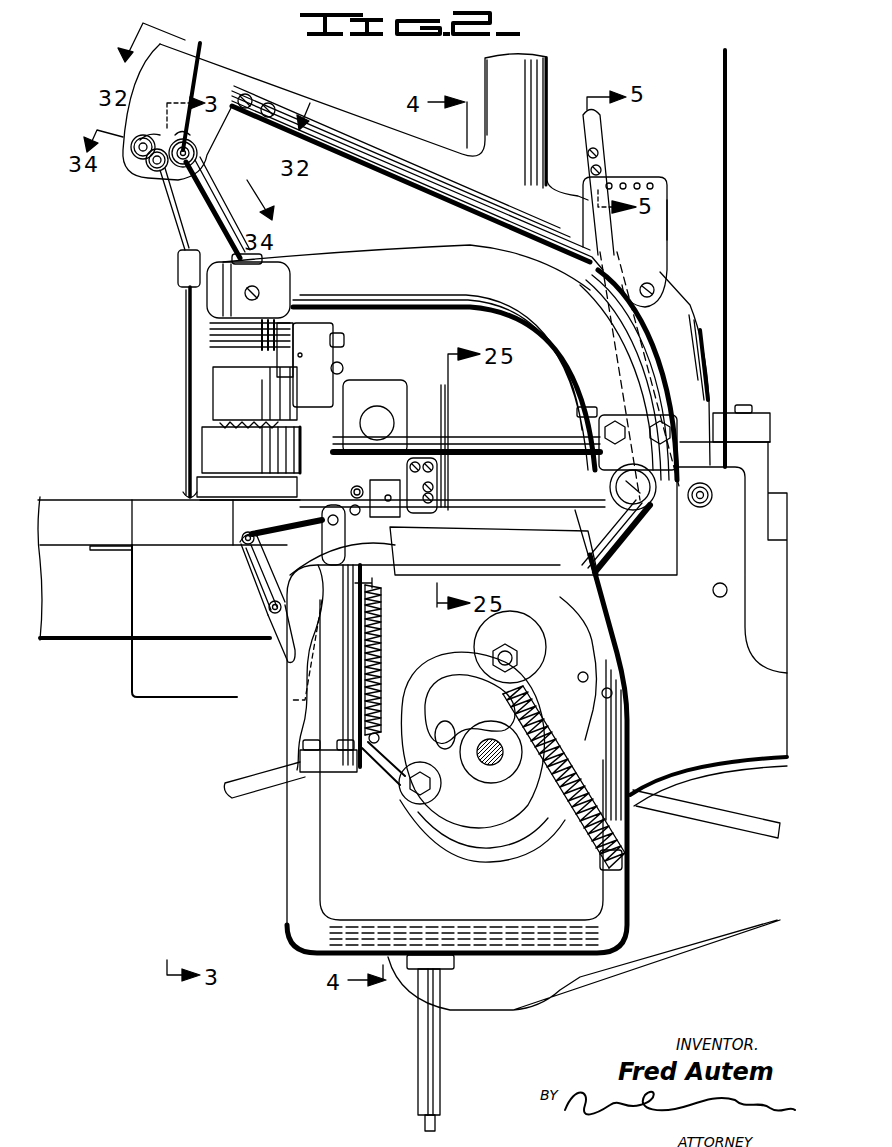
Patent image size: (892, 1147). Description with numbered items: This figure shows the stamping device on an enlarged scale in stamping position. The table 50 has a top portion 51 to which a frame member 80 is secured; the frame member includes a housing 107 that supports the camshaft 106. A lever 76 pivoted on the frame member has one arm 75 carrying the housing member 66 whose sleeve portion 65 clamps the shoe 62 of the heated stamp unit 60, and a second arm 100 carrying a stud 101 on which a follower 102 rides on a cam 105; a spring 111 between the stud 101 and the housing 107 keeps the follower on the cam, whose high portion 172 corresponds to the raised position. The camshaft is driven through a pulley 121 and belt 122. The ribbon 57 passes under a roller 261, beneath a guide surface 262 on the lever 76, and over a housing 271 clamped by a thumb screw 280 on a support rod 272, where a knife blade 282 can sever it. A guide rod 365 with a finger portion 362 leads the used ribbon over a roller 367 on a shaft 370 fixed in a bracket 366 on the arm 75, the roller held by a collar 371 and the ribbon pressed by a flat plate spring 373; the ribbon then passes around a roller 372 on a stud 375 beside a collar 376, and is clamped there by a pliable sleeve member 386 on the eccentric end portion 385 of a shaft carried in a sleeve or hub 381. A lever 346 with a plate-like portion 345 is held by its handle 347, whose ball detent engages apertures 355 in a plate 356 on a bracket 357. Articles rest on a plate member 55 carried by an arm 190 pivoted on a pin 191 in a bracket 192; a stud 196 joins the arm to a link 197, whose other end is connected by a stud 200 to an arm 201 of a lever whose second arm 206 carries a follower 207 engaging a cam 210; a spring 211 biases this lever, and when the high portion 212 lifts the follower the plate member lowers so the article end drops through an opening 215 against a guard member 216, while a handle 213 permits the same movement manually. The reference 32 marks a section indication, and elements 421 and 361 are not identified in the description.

The arm 32 is at (363, 157).
The post 421 is at (485, 74).
The stud 375 is at (135, 152).
The collar 376 is at (148, 160).
The sleeve member 386 is at (154, 168).
The eccentric end portion 385 is at (158, 170).
The shaft 370 is at (196, 150).
The roller 367 is at (197, 160).
The roller 372 is at (145, 140).
The flat plate spring 373 is at (178, 140).
The collar 371 is at (195, 172).
The bracket 366 is at (195, 222).
The sleeve or hub 381 is at (166, 175).
The guide rod 365 is at (185, 323).
The finger portion 362 is at (185, 492).
The arm 75 is at (378, 252).
The lever 76 is at (577, 380).
The bracket 357 is at (668, 278).
The handle 347 is at (603, 152).
The spaced apertures 355 is at (652, 182).
The plate 356 is at (668, 204).
The paper strip or ribbon 57 is at (727, 206).
The lever 346 is at (677, 565).
The guide surface 262 is at (655, 512).
The roller 261 is at (705, 506).
The support rod 272 is at (510, 436).
The knife blade 282 is at (447, 410).
The second arm 100 is at (623, 578).
The member 361 is at (620, 628).
The housing member 66 is at (240, 355).
The sleeve portion 65 is at (215, 382).
The stamp unit 60 is at (208, 427).
The shoe 62 is at (210, 455).
The housing 271 is at (368, 392).
The thumb screw 280 is at (385, 410).
The pin 191 is at (333, 505).
The top portion 51 is at (48, 497).
The table 50 is at (71, 638).
The opening 215 is at (132, 497).
The guard member 216 is at (130, 665).
The plate member 55 is at (222, 505).
The arm 190 is at (240, 518).
The stud 196 is at (244, 543).
The bracket 192 is at (310, 572).
The link 197 is at (255, 592).
The stud 200 is at (270, 607).
The arm 201 is at (280, 652).
The housing 107 is at (287, 872).
The handle 213 is at (235, 795).
The spring 211 is at (378, 605).
The plate-like portion 345 is at (427, 574).
The second arm 206 is at (388, 812).
The follower 207 is at (436, 800).
The follower 102 is at (478, 634).
The stud 101 is at (492, 656).
The cam 210 is at (432, 676).
The high portion 212 is at (435, 686).
The camshaft 106 is at (497, 765).
The cam 105 is at (422, 836).
The high portion 172 is at (443, 858).
The spring 111 is at (565, 860).
The frame member 80 is at (775, 770).
The belt 122 is at (740, 830).
The pulley 121 is at (514, 1000).